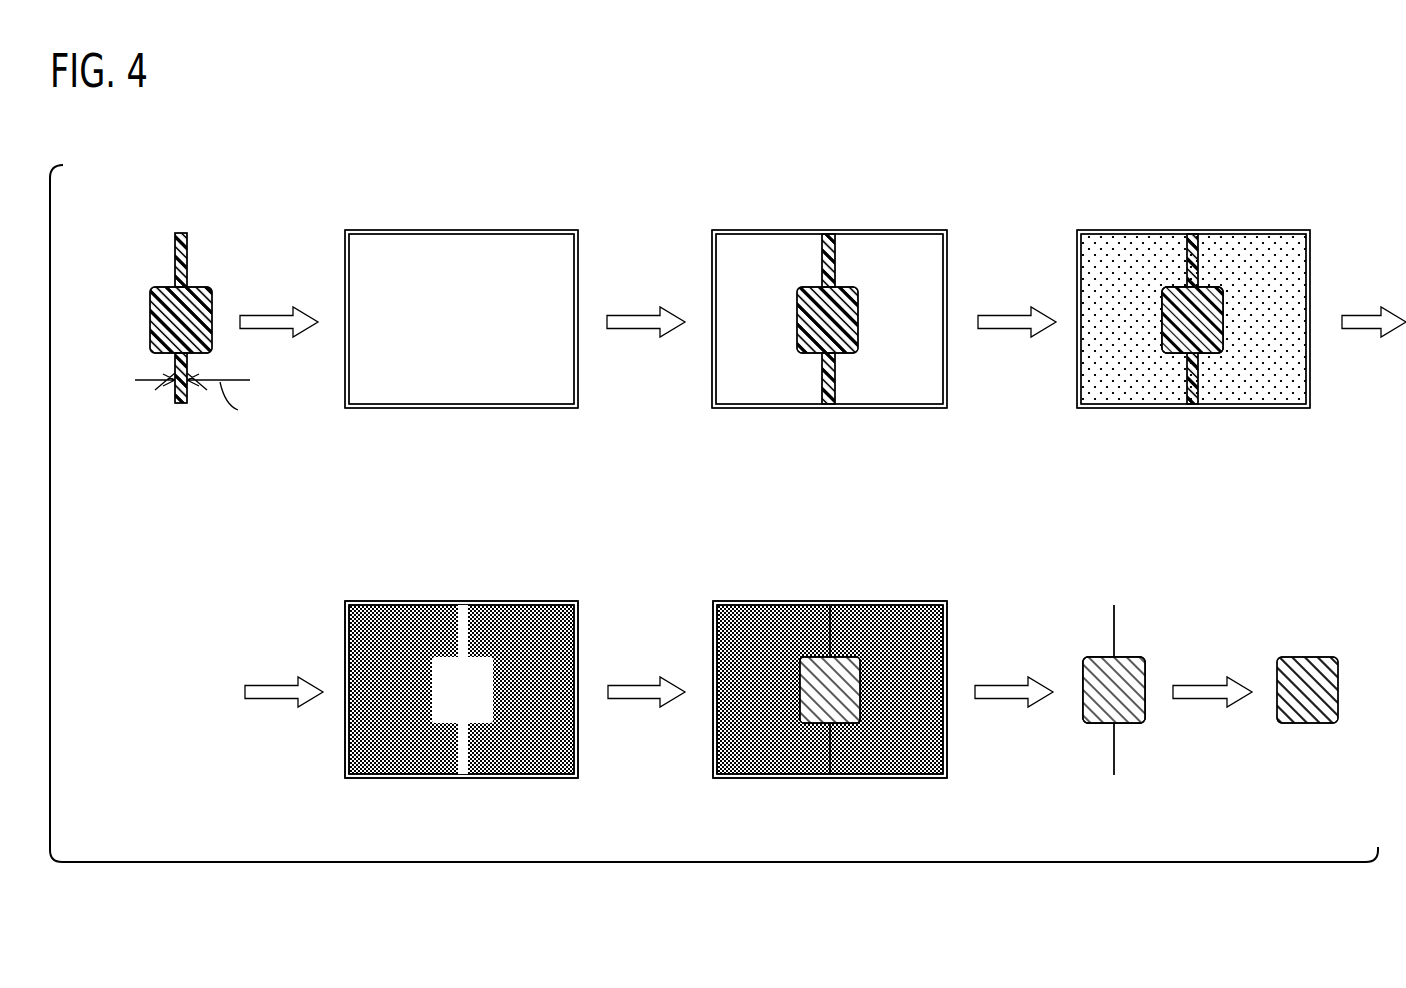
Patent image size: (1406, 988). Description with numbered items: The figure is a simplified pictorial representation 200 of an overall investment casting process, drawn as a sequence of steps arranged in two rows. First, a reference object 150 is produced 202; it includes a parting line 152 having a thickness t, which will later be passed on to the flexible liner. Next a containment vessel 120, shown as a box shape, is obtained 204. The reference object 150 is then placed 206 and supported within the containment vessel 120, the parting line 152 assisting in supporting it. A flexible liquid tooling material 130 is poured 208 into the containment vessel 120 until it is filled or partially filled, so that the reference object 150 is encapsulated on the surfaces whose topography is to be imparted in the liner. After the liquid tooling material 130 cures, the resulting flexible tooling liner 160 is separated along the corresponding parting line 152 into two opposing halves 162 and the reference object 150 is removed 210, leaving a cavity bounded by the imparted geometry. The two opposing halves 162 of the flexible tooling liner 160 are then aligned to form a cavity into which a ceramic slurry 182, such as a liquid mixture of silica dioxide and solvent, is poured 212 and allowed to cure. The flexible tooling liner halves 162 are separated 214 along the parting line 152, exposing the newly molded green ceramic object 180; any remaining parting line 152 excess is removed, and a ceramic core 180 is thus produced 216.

The investment casting process 200 is at (1115, 102).
The reference object production step 202 is at (208, 190).
The containment vessel obtaining step 204 is at (479, 190).
The reference object placement step 206 is at (839, 190).
The liquid tooling material pouring step 208 is at (1208, 190).
The reference object removal step 210 is at (474, 560).
The slurry pouring step 212 is at (841, 560).
The liner halves separation step 214 is at (1128, 560).
The ceramic core production step 216 is at (1319, 606).
The containment vessel 120 is at (522, 230).
The flexible liquid tooling material 130 is at (1242, 255).
The reference object 150 is at (150, 318).
The parting line 152 is at (188, 258).
The flexible tooling liner 160 is at (510, 622).
The opposing halves 162 is at (395, 755).
The ceramic core 180 is at (1123, 675).
The ceramic slurry 182 is at (837, 688).